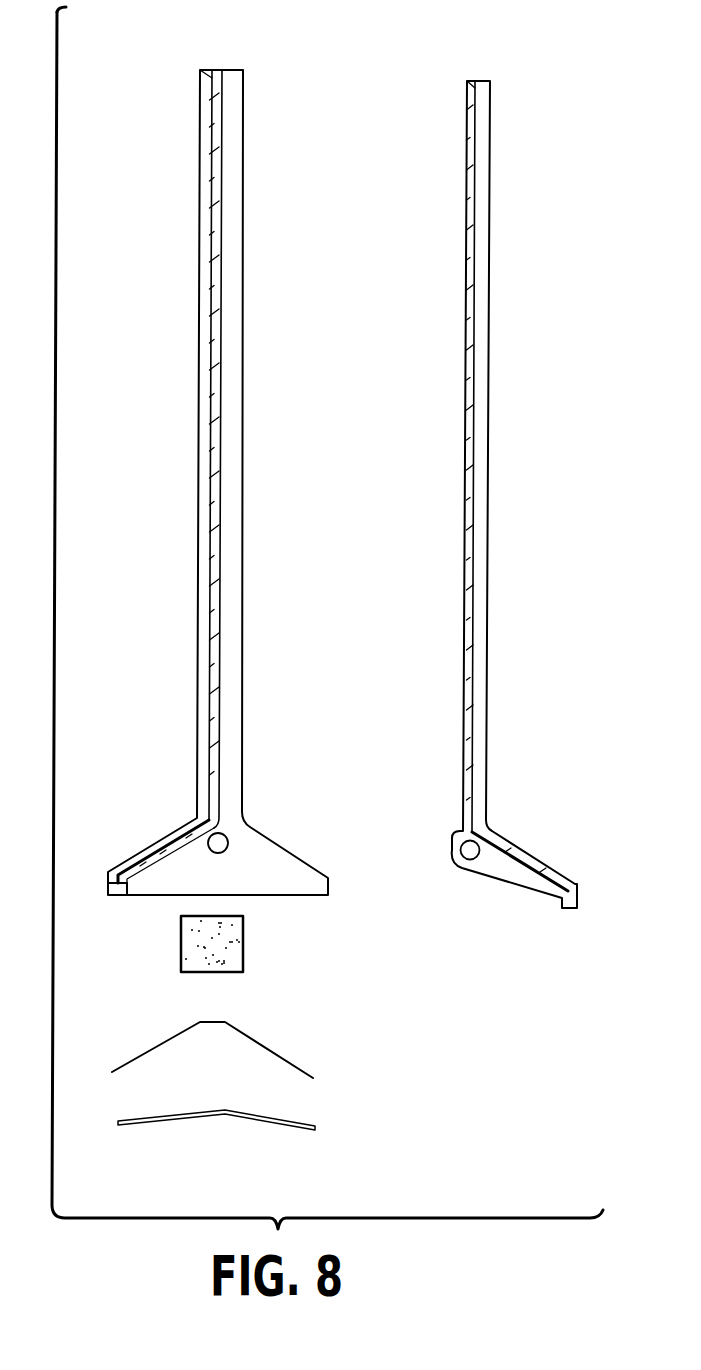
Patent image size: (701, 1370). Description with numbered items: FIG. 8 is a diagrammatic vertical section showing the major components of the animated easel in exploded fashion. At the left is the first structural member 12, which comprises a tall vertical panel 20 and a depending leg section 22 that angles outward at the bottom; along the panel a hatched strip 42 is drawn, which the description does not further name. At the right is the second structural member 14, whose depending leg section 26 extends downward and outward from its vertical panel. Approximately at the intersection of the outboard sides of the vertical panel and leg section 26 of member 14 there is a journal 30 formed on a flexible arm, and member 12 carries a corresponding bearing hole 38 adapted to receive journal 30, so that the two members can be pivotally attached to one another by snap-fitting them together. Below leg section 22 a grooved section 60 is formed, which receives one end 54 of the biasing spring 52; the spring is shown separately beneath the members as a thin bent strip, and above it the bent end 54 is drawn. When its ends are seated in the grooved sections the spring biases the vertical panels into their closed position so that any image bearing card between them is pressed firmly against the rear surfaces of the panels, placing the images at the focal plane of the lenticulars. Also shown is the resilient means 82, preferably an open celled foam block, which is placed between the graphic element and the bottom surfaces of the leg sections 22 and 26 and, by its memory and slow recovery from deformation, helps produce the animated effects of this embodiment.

The structural member 12 is at (212, 62).
The structural member 14 is at (483, 70).
The vertical panel 20 is at (226, 116).
The hatched strip 42 is at (210, 360).
The leg section 22 is at (162, 838).
The bearing hole 38 is at (228, 843).
The grooved section 60 is at (108, 884).
The resilient means 82 is at (233, 938).
The spring end 54 is at (280, 1055).
The biasing spring 52 is at (272, 1128).
The leg section 26 is at (528, 853).
The journal 30 is at (470, 860).